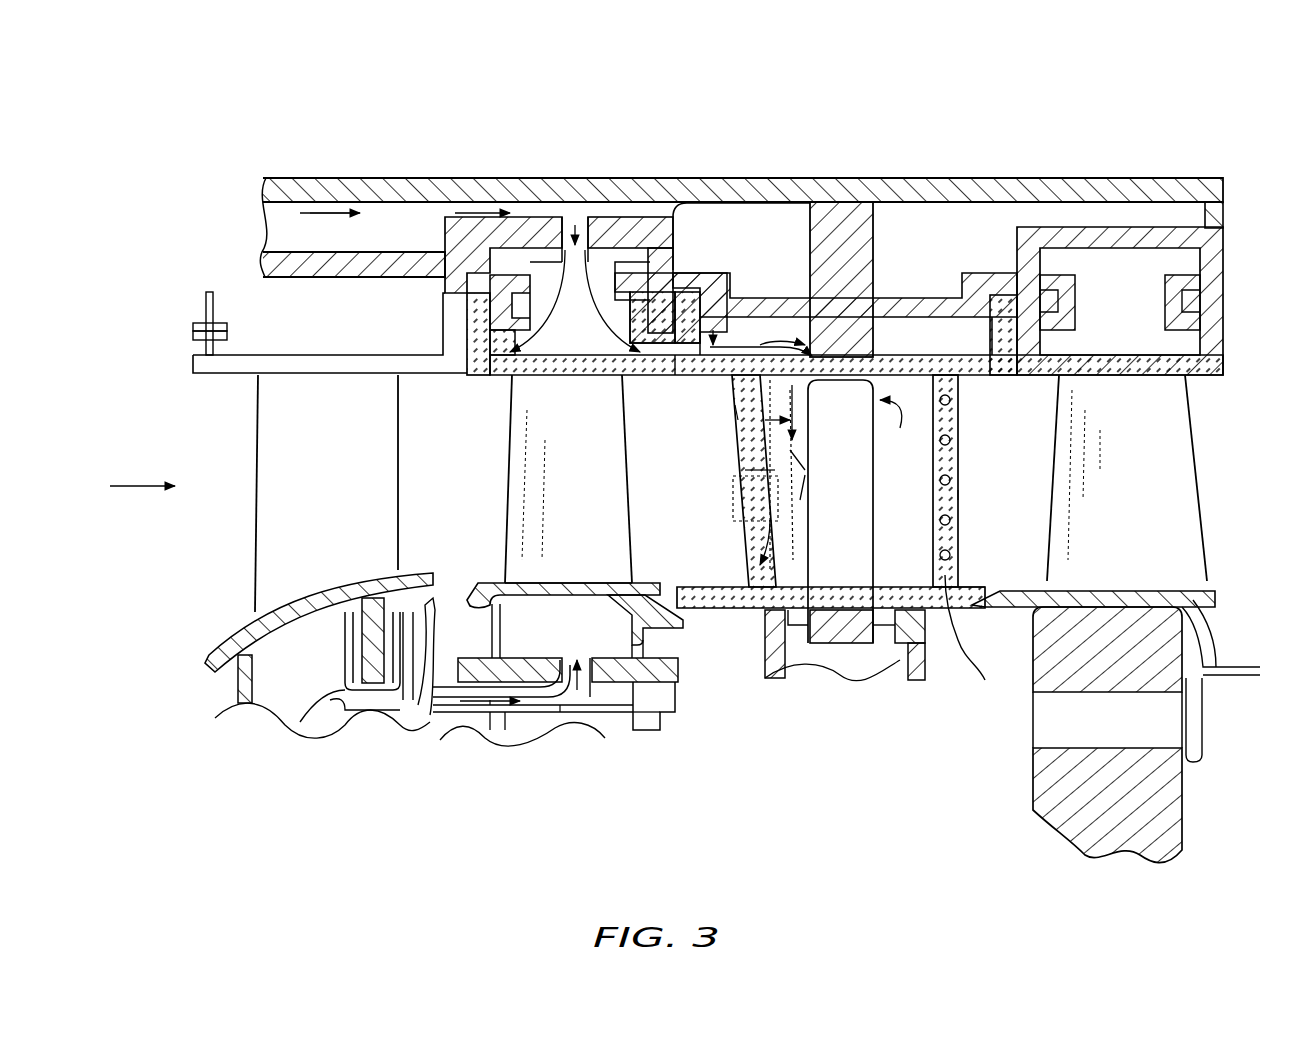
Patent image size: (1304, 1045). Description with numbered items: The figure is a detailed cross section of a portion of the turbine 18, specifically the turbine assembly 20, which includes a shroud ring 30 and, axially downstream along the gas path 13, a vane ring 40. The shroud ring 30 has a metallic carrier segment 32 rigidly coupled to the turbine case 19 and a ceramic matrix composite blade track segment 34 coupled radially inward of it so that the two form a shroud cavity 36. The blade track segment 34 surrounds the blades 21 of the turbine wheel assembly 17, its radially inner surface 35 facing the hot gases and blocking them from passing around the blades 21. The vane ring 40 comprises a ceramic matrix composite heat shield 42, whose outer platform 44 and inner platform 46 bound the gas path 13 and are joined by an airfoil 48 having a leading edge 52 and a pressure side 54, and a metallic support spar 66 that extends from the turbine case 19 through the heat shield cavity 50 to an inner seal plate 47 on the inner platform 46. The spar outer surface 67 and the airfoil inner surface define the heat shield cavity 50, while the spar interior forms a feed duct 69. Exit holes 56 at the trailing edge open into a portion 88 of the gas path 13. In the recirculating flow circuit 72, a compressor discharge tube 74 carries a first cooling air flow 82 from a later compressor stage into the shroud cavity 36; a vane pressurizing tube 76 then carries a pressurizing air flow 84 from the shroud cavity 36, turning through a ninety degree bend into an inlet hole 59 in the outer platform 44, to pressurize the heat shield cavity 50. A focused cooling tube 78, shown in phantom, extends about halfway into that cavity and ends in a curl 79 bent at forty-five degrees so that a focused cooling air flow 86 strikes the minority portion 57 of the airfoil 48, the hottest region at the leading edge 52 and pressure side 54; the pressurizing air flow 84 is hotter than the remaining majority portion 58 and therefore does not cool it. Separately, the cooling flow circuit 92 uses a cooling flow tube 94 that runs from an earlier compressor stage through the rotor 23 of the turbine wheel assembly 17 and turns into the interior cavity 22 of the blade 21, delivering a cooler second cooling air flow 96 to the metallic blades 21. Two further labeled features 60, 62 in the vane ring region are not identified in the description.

The gas path 13 is at (138, 470).
The turbine wheel assembly 17 is at (606, 745).
The turbine 18 is at (1117, 132).
The turbine case 19 is at (706, 172).
The turbine assembly 20 is at (205, 148).
The blades 21 is at (600, 510).
The interior cavity 22 is at (590, 484).
The rotor 23 is at (690, 682).
The shroud ring 30 is at (612, 210).
The carrier segment 32 is at (535, 210).
The blade track segment 34 is at (478, 387).
The radially inner surface 35 is at (508, 387).
The shroud cavity 36 is at (590, 355).
The vane ring 40 is at (775, 172).
The heat shield 42 is at (730, 625).
The outer platform 44 is at (920, 335).
The inner platform 46 is at (890, 625).
The inner seal plate 47 is at (800, 630).
The airfoil 48 is at (765, 460).
The heat shield cavity 50 is at (920, 504).
The leading edge 52 is at (728, 402).
The pressure side 54 is at (968, 462).
The exit holes 56 is at (950, 620).
The minority portion 57 is at (730, 490).
The majority portion 58 is at (912, 683).
The inlet hole 59 is at (745, 384).
The aft flange 60 is at (988, 385).
The aft platform end 62 is at (972, 575).
The support spar 66 is at (852, 172).
The spar outer surface 67 is at (901, 432).
The feed duct 69 is at (857, 484).
The recirculating flow circuit 72 is at (255, 214).
The compressor discharge tube 74 is at (477, 200).
The vane pressurizing tube 76 is at (738, 333).
The focused cooling tube 78 is at (758, 428).
The curl 79 is at (782, 530).
The first cooling air flow 82 is at (323, 228).
The pressurizing air flow 84 is at (716, 325).
The focused cooling air flow 86 is at (810, 500).
The portion of the gas path 88 is at (1011, 514).
The cooling flow circuit 92 is at (435, 735).
The cooling flow tube 94 is at (555, 720).
The second cooling air flow 96 is at (462, 720).